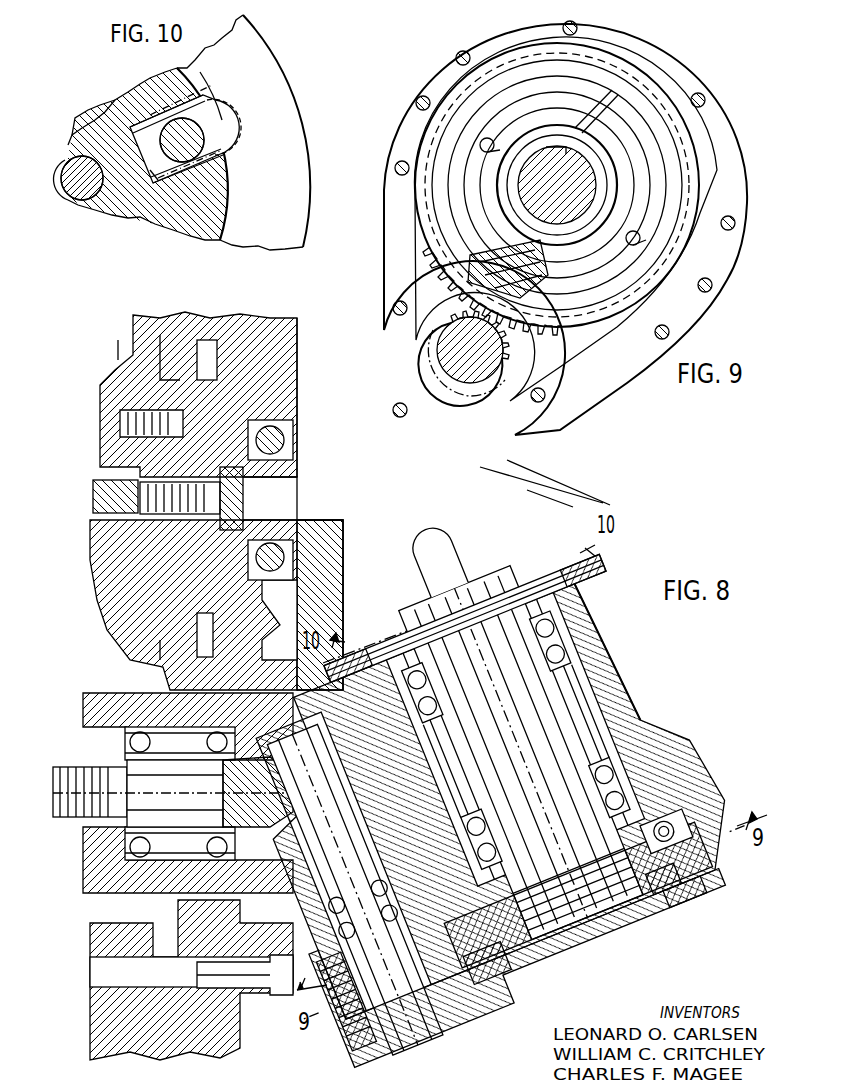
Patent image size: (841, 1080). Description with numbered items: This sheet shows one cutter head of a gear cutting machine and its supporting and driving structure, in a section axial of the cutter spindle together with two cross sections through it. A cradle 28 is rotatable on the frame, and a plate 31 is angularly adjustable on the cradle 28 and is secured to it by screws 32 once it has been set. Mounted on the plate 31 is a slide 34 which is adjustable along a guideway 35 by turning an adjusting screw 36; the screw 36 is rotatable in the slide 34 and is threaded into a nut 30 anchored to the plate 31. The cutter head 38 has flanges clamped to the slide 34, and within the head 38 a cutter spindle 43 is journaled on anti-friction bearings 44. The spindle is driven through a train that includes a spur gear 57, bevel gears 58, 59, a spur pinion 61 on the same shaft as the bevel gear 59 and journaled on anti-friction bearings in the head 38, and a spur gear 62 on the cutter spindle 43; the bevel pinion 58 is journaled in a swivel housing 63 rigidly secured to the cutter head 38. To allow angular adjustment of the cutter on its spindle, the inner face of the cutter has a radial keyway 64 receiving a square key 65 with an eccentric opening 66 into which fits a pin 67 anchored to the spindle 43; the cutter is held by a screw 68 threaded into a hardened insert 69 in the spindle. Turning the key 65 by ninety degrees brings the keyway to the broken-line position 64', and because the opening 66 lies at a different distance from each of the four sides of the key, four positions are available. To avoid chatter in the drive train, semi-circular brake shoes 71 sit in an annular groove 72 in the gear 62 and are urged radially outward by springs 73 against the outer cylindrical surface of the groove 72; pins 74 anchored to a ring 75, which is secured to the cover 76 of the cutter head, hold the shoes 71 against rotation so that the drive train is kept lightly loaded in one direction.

In FIG. 8, the cradle 28 is at (100, 518).
In FIG. 8, the nut 30 is at (280, 540).
In FIG. 8, the plate 31 is at (188, 330).
In FIG. 8, the screw 32 is at (243, 499).
In FIG. 8, the slide 34 is at (318, 535).
In FIG. 8, the guideway 35 is at (250, 335).
In FIG. 8, the adjusting screw 36 is at (293, 433).
In FIG. 8, the cutter head 38 is at (640, 735).
In FIG. 10, the cutter spindle 43 is at (128, 212).
In FIG. 8, the cutter spindle 43 is at (511, 755).
In FIG. 8, the anti-friction bearings 44 is at (588, 665).
In FIG. 8, the spur gear 57 is at (83, 846).
In FIG. 8, the bevel gear 58 is at (245, 830).
In FIG. 8, the bevel gear 59 is at (410, 781).
In FIG. 9, the spur pinion 61 is at (506, 343).
In FIG. 8, the spur pinion 61 is at (437, 1021).
In FIG. 9, the spur gear 62 is at (558, 335).
In FIG. 8, the spur gear 62 is at (650, 738).
In FIG. 8, the swivel housing 63 is at (140, 893).
In FIG. 10, the keyway 64 is at (203, 139).
In FIG. 10, the keyway position 64' is at (238, 140).
In FIG. 10, the square key 65 is at (190, 100).
In FIG. 10, the eccentric opening 66 is at (185, 130).
In FIG. 10, the pin 67 is at (183, 165).
In FIG. 8, the pin 67 is at (565, 560).
In FIG. 10, the screw 68 is at (60, 172).
In FIG. 8, the screw 68 is at (438, 547).
In FIG. 10, the hardened insert 69 is at (92, 203).
In FIG. 9, the brake shoes 71 is at (563, 97).
In FIG. 8, the brake shoes 71 is at (687, 880).
In FIG. 8, the annular groove 72 is at (668, 826).
In FIG. 9, the springs 73 is at (608, 104).
In FIG. 8, the springs 73 is at (492, 966).
In FIG. 9, the pins 74 is at (490, 140).
In FIG. 8, the ring 75 is at (680, 879).
In FIG. 9, the cover 76 is at (440, 78).
In FIG. 8, the cover 76 is at (542, 941).